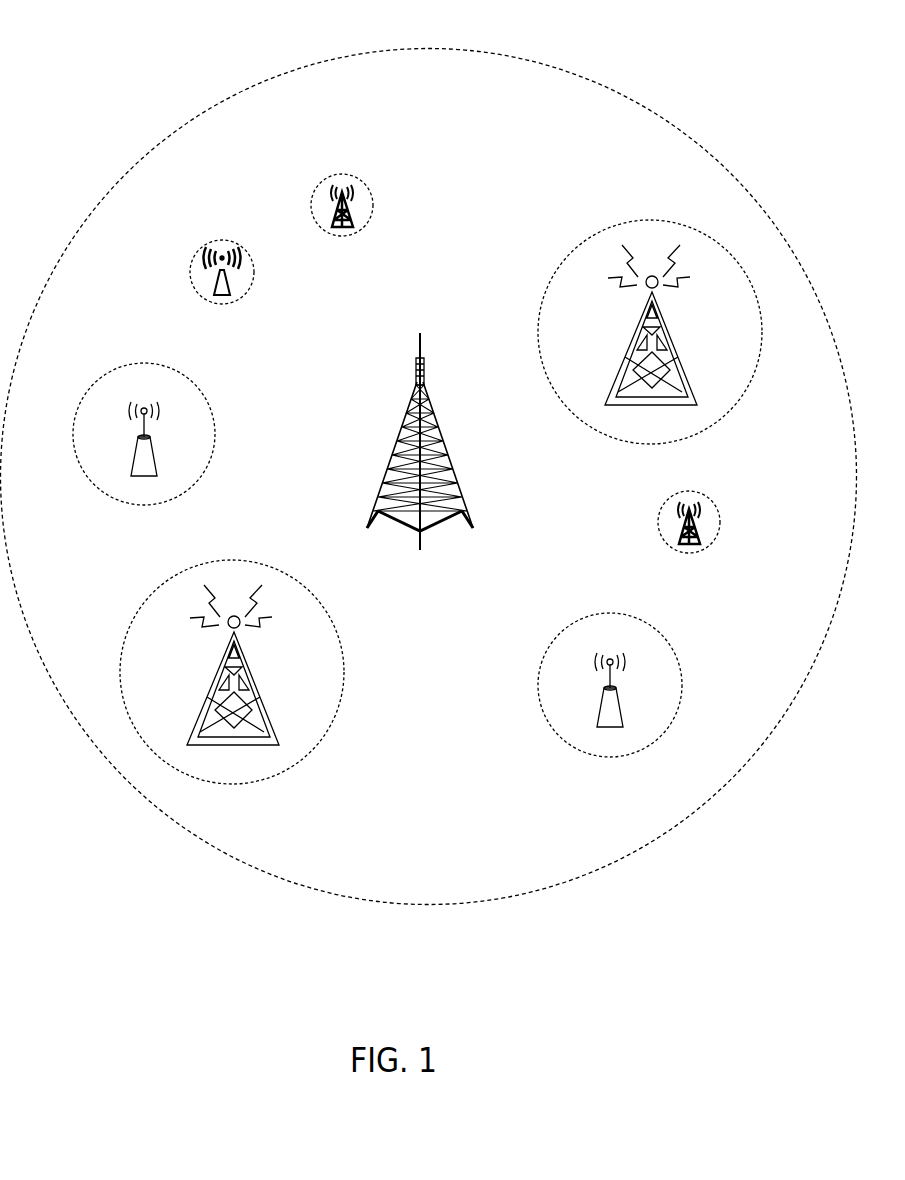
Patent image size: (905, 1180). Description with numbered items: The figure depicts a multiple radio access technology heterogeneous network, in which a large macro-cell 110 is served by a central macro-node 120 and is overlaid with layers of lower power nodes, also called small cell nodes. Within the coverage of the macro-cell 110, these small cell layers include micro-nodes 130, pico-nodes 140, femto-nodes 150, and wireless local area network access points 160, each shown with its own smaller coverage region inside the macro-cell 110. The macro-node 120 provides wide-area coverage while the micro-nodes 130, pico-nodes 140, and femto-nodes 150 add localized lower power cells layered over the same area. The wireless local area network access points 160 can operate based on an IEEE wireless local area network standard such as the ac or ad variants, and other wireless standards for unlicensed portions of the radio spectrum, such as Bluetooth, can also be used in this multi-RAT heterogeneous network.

The macro-cell 110 is at (197, 108).
The macro-node 120 is at (400, 423).
The micro-nodes 130 is at (595, 233).
The pico-nodes 140 is at (598, 694).
The femto-nodes 150 is at (661, 519).
The wireless local area network (WLAN) access points 160 is at (196, 260).